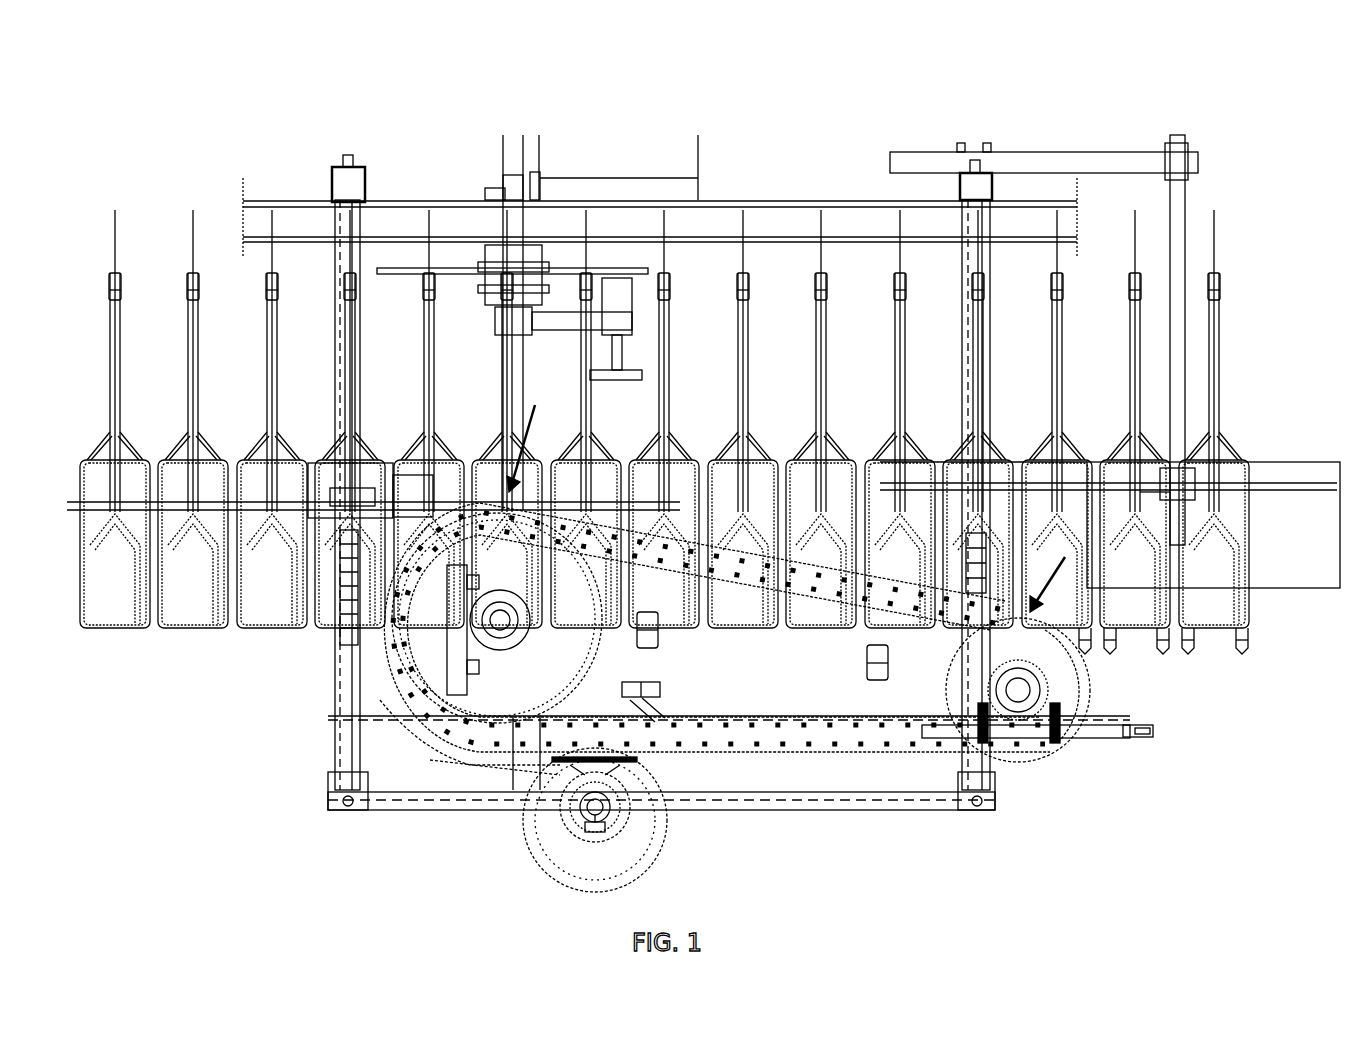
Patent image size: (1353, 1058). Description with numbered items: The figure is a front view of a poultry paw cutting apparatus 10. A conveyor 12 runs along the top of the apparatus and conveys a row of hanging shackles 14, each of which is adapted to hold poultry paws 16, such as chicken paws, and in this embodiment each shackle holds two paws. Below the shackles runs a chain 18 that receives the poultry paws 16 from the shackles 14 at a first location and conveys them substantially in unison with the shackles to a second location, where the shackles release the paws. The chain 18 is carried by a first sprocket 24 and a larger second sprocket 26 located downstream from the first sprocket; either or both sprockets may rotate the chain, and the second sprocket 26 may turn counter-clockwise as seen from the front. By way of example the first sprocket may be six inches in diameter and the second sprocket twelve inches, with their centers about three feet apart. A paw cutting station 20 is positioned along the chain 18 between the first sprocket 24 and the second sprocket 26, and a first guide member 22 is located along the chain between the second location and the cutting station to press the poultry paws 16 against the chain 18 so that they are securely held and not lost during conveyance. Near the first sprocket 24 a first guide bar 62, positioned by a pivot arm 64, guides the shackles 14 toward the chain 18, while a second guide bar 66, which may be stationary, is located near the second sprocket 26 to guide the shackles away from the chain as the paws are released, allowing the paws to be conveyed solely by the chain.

The poultry paw cutting apparatus 10 is at (1160, 100).
The conveyor 12 is at (780, 222).
The shackles 14 is at (118, 365).
The poultry paw 16 is at (1240, 630).
The chain 18 is at (905, 745).
The paw cutting station 20 is at (632, 843).
The first guide member 22 is at (440, 733).
The first sprocket 24 is at (945, 682).
The second sprocket 26 is at (567, 645).
The first guide bar 62 is at (1272, 483).
The pivot arm 64 is at (1055, 165).
The second guide bar 66 is at (215, 500).